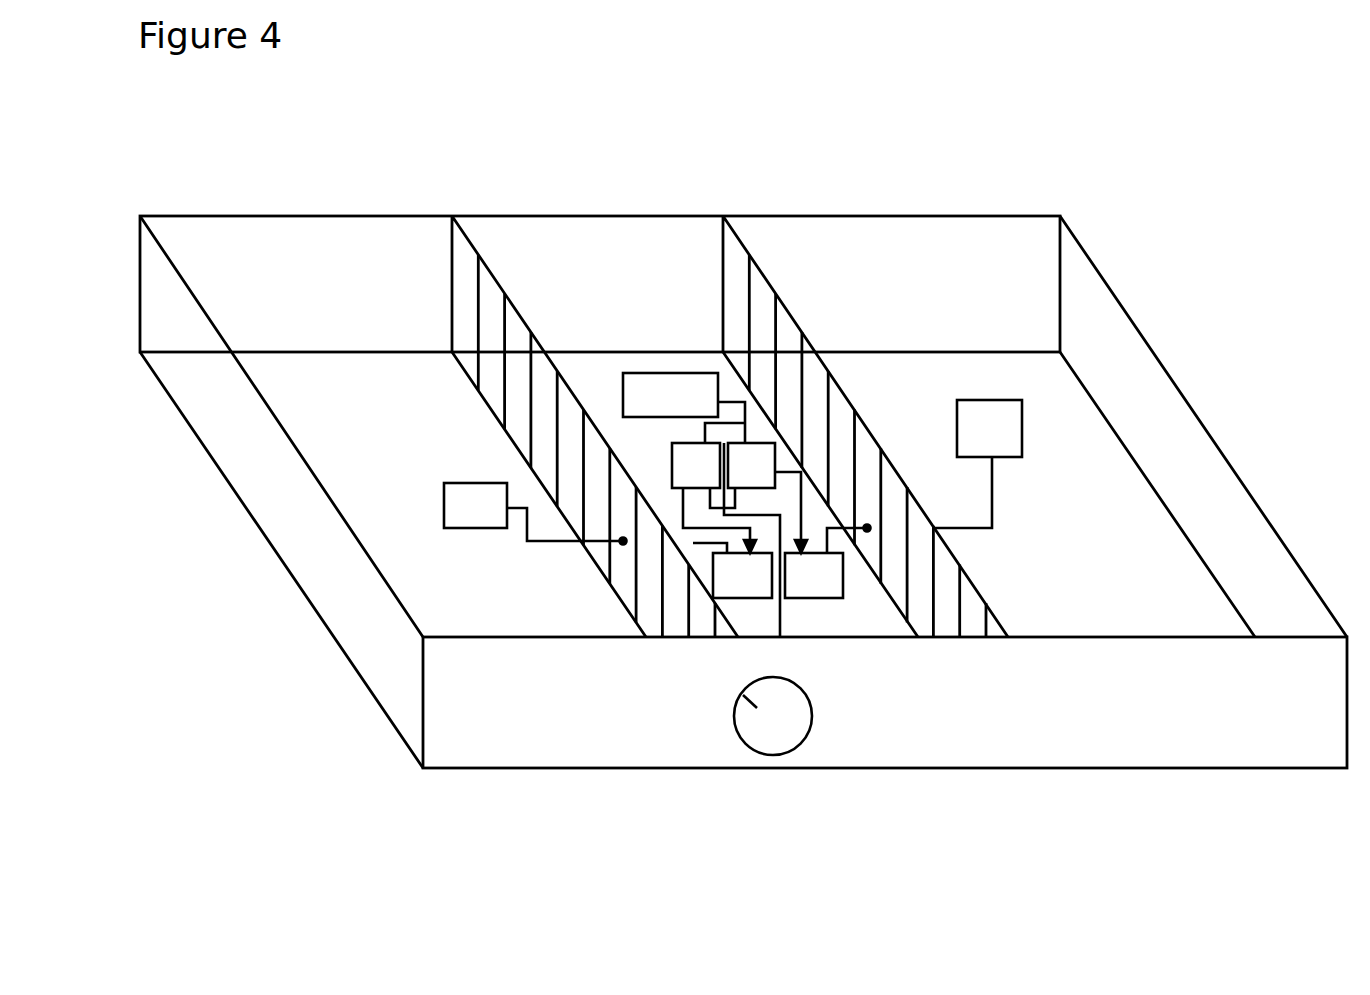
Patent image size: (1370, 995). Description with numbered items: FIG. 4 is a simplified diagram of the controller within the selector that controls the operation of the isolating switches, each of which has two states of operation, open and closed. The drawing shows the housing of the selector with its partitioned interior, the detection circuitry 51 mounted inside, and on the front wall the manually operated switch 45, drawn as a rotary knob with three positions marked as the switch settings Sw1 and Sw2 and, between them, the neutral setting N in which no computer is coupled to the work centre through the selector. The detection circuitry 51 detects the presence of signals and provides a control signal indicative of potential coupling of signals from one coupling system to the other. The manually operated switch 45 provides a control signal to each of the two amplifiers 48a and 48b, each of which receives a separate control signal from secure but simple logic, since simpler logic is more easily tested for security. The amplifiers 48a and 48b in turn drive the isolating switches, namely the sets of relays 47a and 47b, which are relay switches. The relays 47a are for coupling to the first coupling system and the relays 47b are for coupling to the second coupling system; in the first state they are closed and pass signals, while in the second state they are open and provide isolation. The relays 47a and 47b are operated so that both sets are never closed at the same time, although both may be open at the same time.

The detection circuitry 51 is at (670, 373).
The set of relays 47a is at (490, 530).
The set of relays 47b is at (1003, 457).
The amplifier 48a is at (733, 598).
The amplifier 48b is at (830, 598).
The manual switch 45 is at (773, 755).
The third switch setting N is at (772, 658).
The switch setting Sw1 is at (704, 672).
The switch setting Sw2 is at (834, 672).